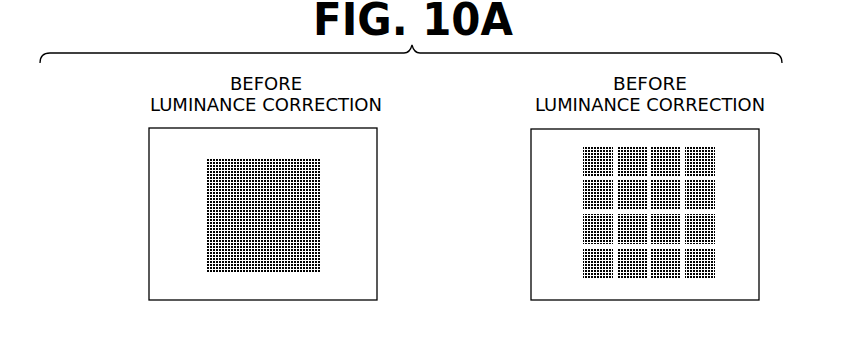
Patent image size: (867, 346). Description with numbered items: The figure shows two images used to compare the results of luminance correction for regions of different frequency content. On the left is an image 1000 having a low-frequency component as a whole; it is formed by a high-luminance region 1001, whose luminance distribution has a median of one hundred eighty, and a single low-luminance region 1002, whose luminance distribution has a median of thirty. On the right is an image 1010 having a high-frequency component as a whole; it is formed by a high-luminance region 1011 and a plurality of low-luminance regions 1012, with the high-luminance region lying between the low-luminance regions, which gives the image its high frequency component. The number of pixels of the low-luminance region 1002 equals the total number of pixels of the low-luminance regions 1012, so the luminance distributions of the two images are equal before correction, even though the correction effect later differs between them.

The image 1000 is at (149, 150).
The high-luminance region 1001 is at (168, 200).
The low-luminance region 1002 is at (207, 248).
The image 1010 is at (531, 150).
The high-luminance region 1011 is at (550, 200).
The low-luminance regions 1012 is at (583, 262).